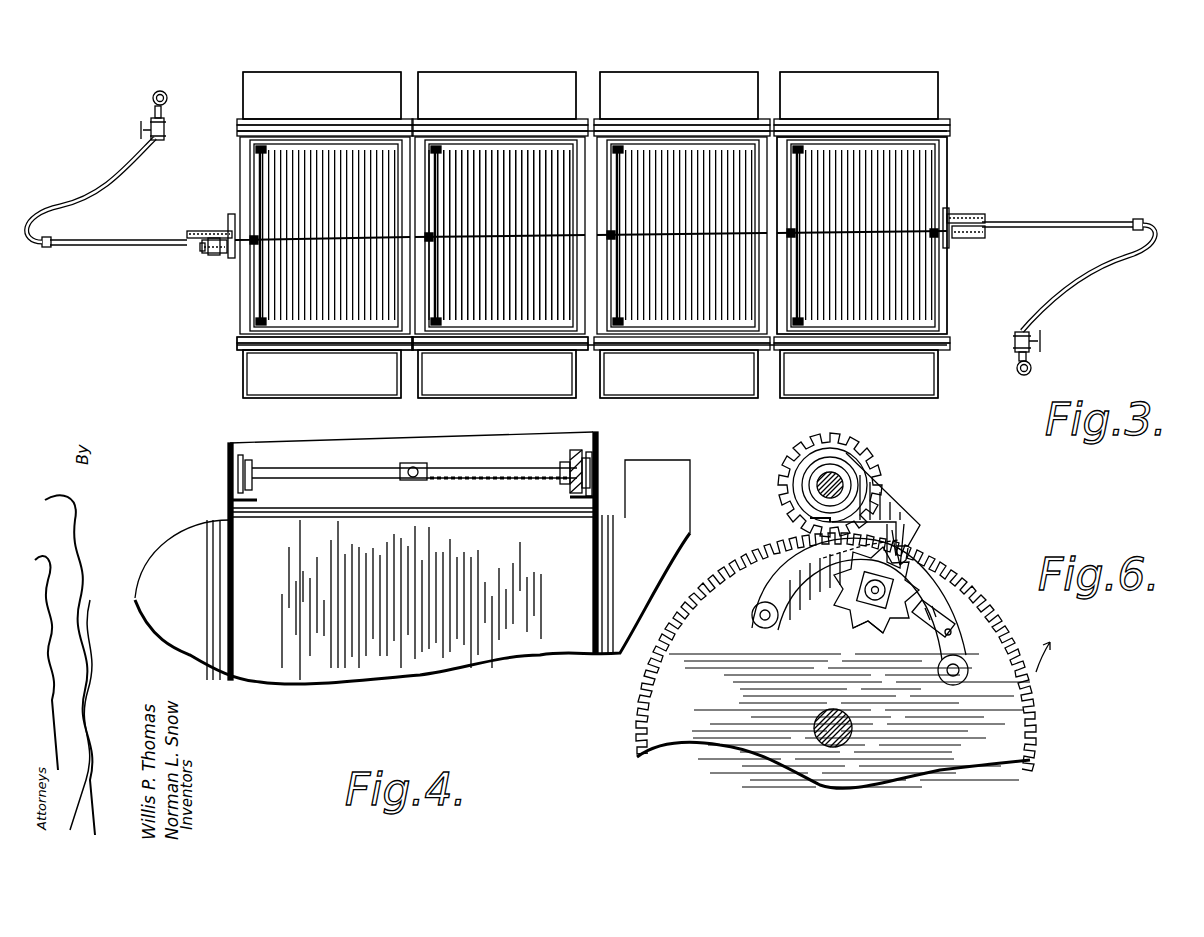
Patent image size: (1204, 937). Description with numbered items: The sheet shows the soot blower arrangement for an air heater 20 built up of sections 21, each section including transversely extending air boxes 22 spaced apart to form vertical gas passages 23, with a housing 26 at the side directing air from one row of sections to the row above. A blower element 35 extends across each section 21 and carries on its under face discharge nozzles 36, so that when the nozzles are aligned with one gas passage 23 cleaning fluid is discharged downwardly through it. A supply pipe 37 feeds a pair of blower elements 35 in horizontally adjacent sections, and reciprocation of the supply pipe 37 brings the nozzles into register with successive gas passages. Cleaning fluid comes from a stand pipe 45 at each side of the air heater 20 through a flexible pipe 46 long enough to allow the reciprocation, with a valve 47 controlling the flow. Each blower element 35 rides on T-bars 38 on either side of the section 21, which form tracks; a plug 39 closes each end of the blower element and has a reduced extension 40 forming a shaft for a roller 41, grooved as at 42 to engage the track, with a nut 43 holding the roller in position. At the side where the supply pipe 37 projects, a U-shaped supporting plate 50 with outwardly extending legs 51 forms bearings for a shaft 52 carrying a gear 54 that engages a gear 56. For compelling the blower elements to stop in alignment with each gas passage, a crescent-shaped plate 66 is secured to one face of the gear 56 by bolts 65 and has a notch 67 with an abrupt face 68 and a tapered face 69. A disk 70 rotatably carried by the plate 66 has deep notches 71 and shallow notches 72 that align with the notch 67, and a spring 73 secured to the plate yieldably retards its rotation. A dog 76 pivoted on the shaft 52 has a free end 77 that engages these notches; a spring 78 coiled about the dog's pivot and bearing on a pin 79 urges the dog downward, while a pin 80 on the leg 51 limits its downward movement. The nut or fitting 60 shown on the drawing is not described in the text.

In FIG. 3, the air heater 20 is at (930, 380).
In FIG. 3, the section 21 is at (722, 130).
In FIG. 4, the section 21 is at (567, 654).
In FIG. 3, the air box 22 is at (500, 150).
In FIG. 4, the air box 22 is at (418, 600).
In FIG. 3, the gas passage 23 is at (522, 150).
In FIG. 4, the gas passage 23 is at (300, 667).
In FIG. 3, the housing 26 is at (672, 80).
In FIG. 4, the housing 26 is at (142, 598).
In FIG. 3, the blower element 35 is at (252, 187).
In FIG. 4, the blower element 35 is at (500, 467).
In FIG. 4, the discharge nozzle 36 is at (476, 480).
In FIG. 3, the supply pipe 37 is at (157, 247).
In FIG. 4, the supply pipe 37 is at (402, 478).
In FIG. 3, the T-bar 38 is at (322, 325).
In FIG. 4, the T-bar 38 is at (247, 502).
In FIG. 4, the plug 39 is at (562, 477).
In FIG. 4, the reduced extension 40 is at (599, 462).
In FIG. 3, the roller 41 is at (243, 340).
In FIG. 4, the roller 41 is at (253, 465).
In FIG. 4, the groove 42 is at (242, 458).
In FIG. 4, the nut 43 is at (228, 455).
In FIG. 3, the stand pipe 45 is at (167, 92).
In FIG. 3, the flexible pipe 46 is at (112, 197).
In FIG. 3, the valve 47 is at (141, 128).
In FIG. 3, the supporting plate 50 is at (231, 258).
In FIG. 3, the leg 51 is at (217, 231).
In FIG. 3, the shaft 52 is at (213, 253).
In FIG. 6, the shaft 52 is at (848, 480).
In FIG. 3, the gear 54 is at (210, 237).
In FIG. 6, the gear 54 is at (862, 446).
In FIG. 6, the gear 56 is at (667, 745).
In FIG. 3, the nut 60 is at (205, 249).
In FIG. 6, the bolt 65 is at (762, 620).
In FIG. 6, the crescent-shaped plate 66 is at (776, 589).
In FIG. 6, the notch 67 is at (852, 554).
In FIG. 6, the abrupt face 68 is at (920, 540).
In FIG. 6, the tapered face 69 is at (873, 583).
In FIG. 6, the disk 70 is at (842, 612).
In FIG. 6, the deep notch 71 is at (860, 632).
In FIG. 6, the shallow notch 72 is at (940, 620).
In FIG. 6, the spring 73 is at (950, 622).
In FIG. 6, the dog 76 is at (886, 506).
In FIG. 6, the free end 77 is at (905, 542).
In FIG. 6, the spring 78 is at (794, 470).
In FIG. 6, the pin 79 is at (930, 528).
In FIG. 6, the pin 80 is at (812, 522).